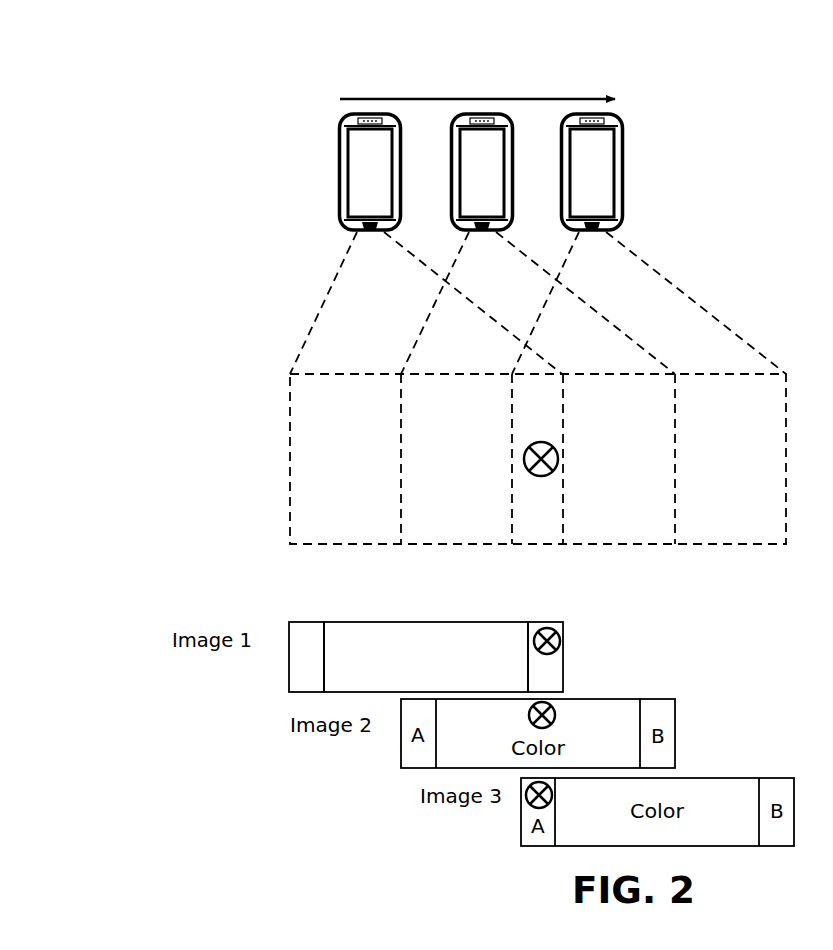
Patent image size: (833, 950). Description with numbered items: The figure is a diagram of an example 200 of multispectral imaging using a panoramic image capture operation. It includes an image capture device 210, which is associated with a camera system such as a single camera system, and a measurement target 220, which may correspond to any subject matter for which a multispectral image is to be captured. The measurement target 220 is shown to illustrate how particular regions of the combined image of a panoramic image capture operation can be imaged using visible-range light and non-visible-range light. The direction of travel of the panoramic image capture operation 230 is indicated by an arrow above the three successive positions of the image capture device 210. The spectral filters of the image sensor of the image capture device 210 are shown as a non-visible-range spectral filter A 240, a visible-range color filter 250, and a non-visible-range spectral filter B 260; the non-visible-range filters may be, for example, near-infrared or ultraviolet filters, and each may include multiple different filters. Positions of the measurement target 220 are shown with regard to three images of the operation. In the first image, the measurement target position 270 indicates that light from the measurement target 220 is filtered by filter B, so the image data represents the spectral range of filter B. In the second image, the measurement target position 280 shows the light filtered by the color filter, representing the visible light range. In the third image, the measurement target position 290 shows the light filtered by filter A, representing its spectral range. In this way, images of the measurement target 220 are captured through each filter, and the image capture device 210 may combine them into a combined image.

The example of multispectral imaging 200 is at (145, 55).
The image capture device 210 is at (240, 27).
The measurement target 220 is at (508, 459).
The direction of travel of the panoramic image capture operation 230 is at (483, 31).
The non-visible-range spectral filter (filter A) 240 is at (305, 621).
The visible-range spectral filter (color filter) 250 is at (417, 621).
The non-visible-range spectral filter (filter B) 260 is at (546, 621).
The measurement target position in Image 1 270 is at (560, 641).
The measurement target position in Image 2 280 is at (556, 715).
The measurement target position in Image 3 290 is at (553, 795).